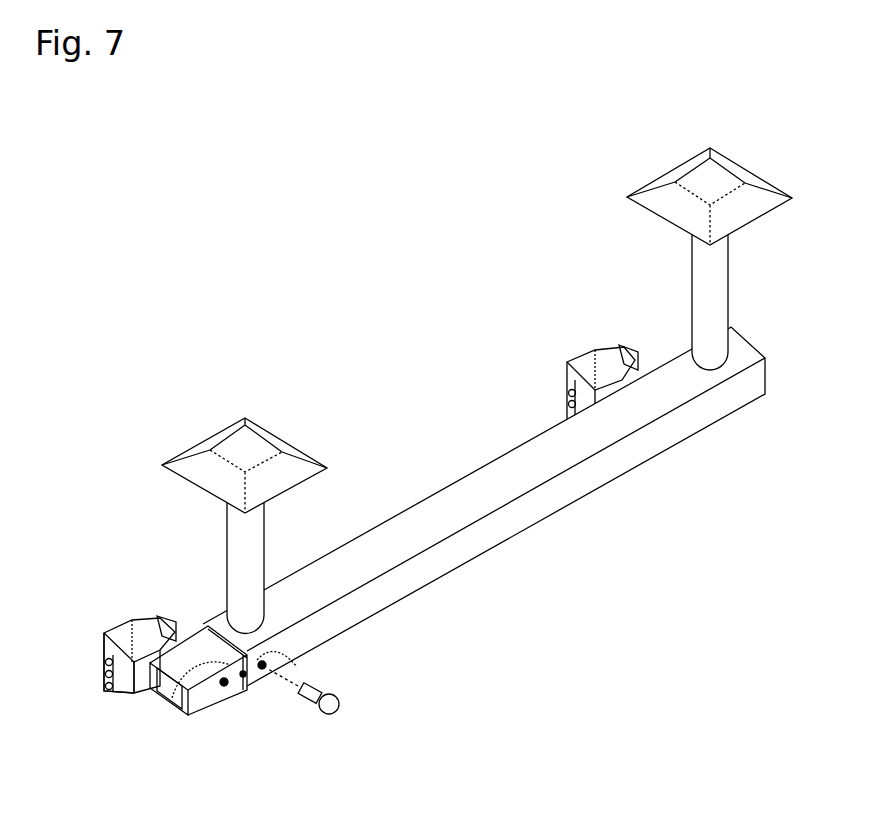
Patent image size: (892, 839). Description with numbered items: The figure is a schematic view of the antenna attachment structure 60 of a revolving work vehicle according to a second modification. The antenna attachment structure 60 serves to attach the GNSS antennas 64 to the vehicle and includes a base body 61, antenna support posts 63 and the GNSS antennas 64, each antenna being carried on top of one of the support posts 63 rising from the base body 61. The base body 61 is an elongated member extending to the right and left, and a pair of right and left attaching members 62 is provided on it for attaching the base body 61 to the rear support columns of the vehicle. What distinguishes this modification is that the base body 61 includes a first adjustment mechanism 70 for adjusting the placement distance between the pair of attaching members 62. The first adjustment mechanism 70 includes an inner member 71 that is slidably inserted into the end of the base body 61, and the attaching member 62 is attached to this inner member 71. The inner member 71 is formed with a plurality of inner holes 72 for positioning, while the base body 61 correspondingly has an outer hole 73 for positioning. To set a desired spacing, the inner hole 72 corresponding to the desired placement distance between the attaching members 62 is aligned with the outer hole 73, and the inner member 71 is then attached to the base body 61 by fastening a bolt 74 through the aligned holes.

The antenna attachment structure 60 is at (322, 347).
The base body 61 is at (460, 495).
The attaching member 62 is at (121, 620).
The antenna support post 63 is at (255, 532).
The GNSS antenna 64 is at (260, 450).
The first adjustment mechanism 70 is at (235, 718).
The inner member 71 is at (201, 707).
The inner hole 72 is at (165, 716).
The outer hole 73 is at (263, 662).
The bolt 74 is at (326, 713).